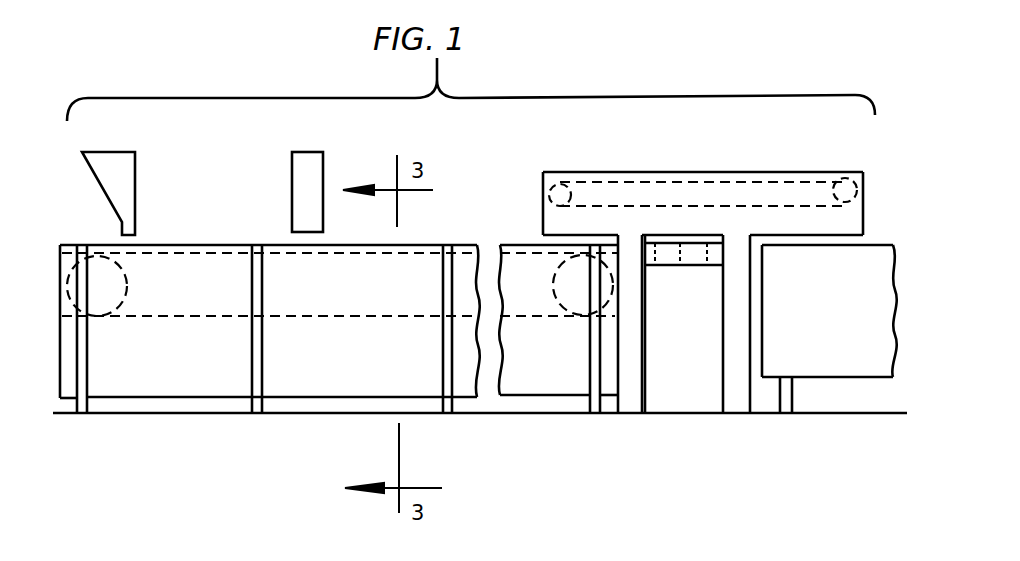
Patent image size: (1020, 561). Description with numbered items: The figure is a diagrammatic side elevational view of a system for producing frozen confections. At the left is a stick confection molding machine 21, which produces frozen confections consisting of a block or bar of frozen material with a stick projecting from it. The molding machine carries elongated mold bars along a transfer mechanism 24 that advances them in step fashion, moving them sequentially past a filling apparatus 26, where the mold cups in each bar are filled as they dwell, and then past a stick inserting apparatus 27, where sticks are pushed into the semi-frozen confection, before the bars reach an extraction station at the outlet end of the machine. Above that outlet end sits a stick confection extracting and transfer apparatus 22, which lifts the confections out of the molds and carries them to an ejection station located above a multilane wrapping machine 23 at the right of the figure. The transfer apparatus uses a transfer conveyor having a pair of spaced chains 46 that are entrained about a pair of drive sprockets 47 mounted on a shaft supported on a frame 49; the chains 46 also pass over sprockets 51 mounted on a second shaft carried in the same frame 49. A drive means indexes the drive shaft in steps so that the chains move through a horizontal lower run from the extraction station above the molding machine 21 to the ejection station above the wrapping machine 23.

The stick confection molding machine 21 is at (209, 242).
The stick confection extracting and transfer apparatus 22 is at (644, 162).
The multilane wrapping machine 23 is at (876, 232).
The transfer mechanism 24 is at (410, 253).
The filling apparatus 26 is at (120, 175).
The stick inserting apparatus 27 is at (316, 167).
The chains 46 is at (690, 180).
The drive sprockets 47 is at (845, 178).
The frame 49 is at (605, 171).
The sprockets 51 is at (563, 183).